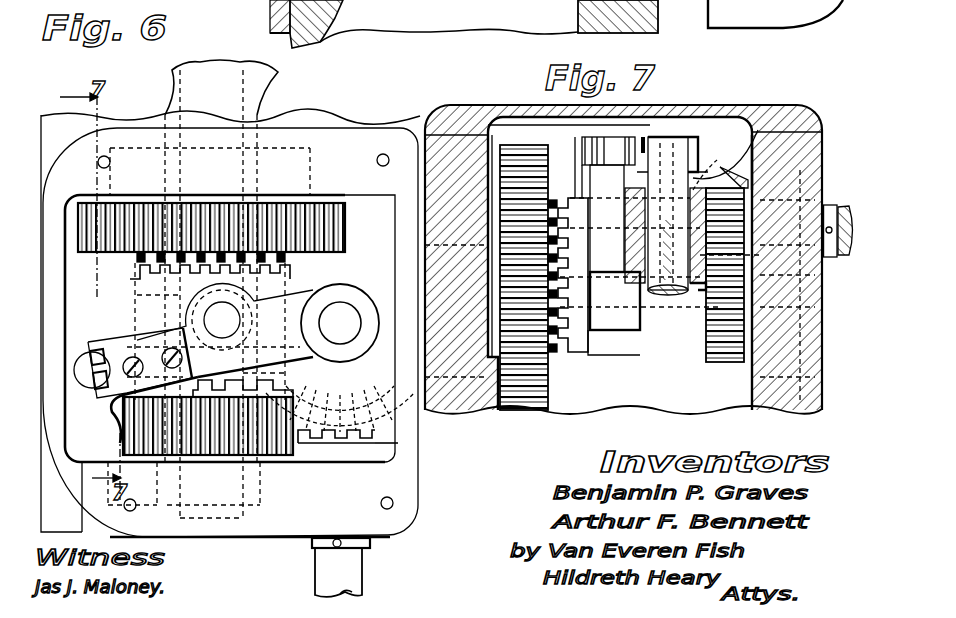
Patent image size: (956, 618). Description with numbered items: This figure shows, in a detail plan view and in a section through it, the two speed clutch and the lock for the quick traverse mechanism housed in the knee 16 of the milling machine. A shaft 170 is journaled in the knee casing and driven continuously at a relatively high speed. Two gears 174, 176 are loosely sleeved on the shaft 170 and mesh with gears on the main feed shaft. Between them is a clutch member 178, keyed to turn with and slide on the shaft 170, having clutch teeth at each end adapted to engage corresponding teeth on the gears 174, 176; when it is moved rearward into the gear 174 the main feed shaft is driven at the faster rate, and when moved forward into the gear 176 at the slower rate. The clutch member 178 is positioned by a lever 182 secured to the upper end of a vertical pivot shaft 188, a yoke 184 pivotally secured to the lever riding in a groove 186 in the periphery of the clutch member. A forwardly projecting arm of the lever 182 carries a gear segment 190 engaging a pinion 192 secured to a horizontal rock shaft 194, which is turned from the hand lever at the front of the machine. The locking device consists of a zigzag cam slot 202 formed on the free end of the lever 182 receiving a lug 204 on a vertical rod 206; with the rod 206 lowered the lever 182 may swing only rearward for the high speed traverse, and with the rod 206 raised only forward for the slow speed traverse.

In FIG. 7, the knee 16 is at (556, 24).
In FIG. 6, the shaft 170 is at (215, 66).
In FIG. 6, the gear 174 is at (342, 234).
In FIG. 7, the gear 174 is at (530, 407).
In FIG. 6, the gear 176 is at (220, 447).
In FIG. 7, the gear 176 is at (718, 362).
In FIG. 6, the clutch member 178 is at (142, 282).
In FIG. 7, the clutch member 178 is at (588, 352).
In FIG. 6, the lever 182 is at (297, 305).
In FIG. 7, the lever 182 is at (663, 137).
In FIG. 6, the yoke 184 is at (183, 303).
In FIG. 7, the yoke 184 is at (598, 212).
In FIG. 7, the groove 186 is at (614, 343).
In FIG. 6, the vertical pivot shaft 188 is at (340, 323).
In FIG. 7, the vertical pivot shaft 188 is at (642, 92).
In FIG. 6, the gear segment 190 is at (340, 410).
In FIG. 7, the gear segment 190 is at (710, 172).
In FIG. 6, the pinion 192 is at (372, 440).
In FIG. 7, the pinion 192 is at (763, 137).
In FIG. 6, the horizontal rock shaft 194 is at (361, 564).
In FIG. 7, the horizontal rock shaft 194 is at (841, 210).
In FIG. 6, the zigzag cam slot 202 is at (133, 318).
In FIG. 7, the zigzag cam slot 202 is at (693, 128).
In FIG. 6, the lug 204 is at (178, 316).
In FIG. 7, the lug 204 is at (707, 163).
In FIG. 6, the vertical rod 206 is at (97, 393).
In FIG. 7, the vertical rod 206 is at (652, 292).